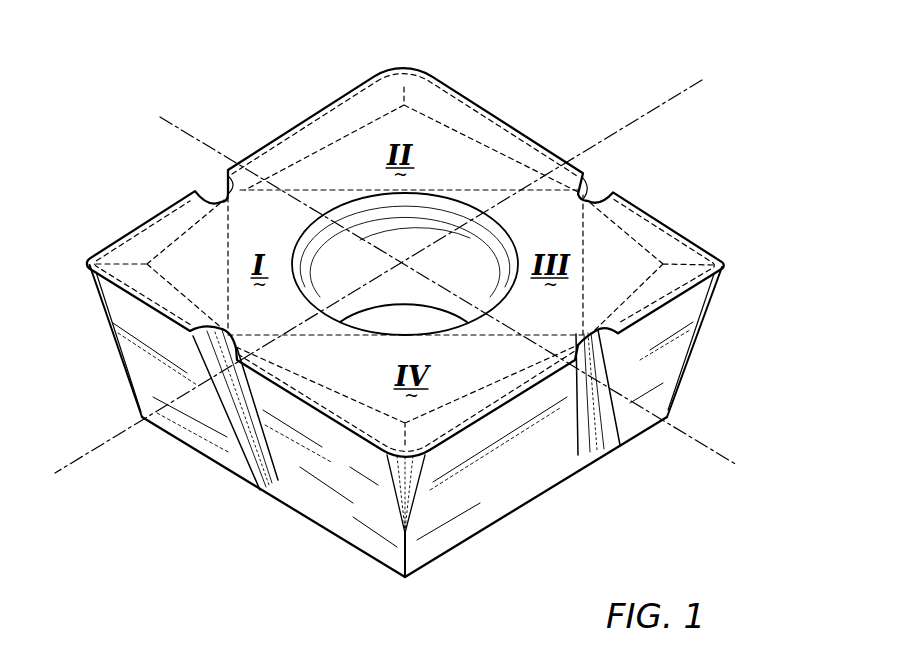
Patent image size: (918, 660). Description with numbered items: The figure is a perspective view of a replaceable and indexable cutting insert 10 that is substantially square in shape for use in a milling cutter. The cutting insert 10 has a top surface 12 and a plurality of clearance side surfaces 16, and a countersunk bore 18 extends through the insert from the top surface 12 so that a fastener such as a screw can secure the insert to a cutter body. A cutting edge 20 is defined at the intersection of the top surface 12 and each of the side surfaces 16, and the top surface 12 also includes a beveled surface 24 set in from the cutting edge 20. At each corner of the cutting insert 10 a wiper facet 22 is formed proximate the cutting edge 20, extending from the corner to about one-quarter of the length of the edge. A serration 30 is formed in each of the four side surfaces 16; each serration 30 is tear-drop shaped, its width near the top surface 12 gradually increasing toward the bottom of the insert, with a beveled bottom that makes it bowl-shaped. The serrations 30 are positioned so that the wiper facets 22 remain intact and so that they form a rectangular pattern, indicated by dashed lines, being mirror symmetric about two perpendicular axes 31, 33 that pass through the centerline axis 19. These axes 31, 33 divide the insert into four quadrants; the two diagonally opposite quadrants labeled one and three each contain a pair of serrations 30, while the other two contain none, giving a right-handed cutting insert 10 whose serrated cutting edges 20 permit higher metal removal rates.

The cutting insert 10 is at (100, 72).
The top surface 12 is at (110, 250).
The clearance side surfaces 16 is at (132, 353).
The countersunk bore 18 is at (437, 220).
The centerline axis 19 is at (405, 262).
The cutting edge 20 is at (297, 127).
The wiper facet 22 is at (427, 100).
The beveled surface 24 is at (373, 98).
The serration 30 is at (218, 194).
The axis 31 is at (170, 117).
The axis 33 is at (690, 90).